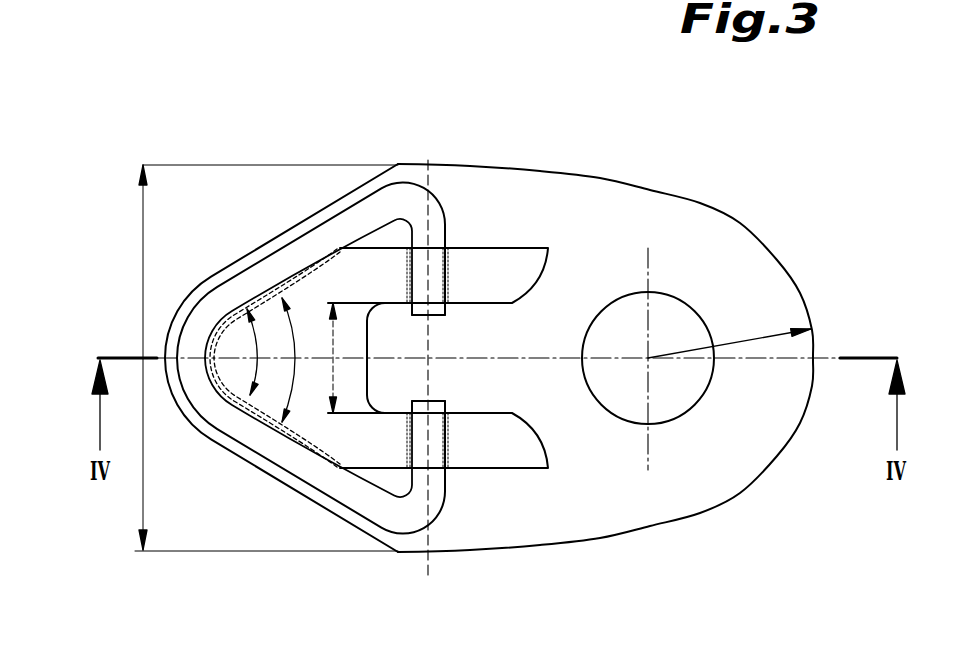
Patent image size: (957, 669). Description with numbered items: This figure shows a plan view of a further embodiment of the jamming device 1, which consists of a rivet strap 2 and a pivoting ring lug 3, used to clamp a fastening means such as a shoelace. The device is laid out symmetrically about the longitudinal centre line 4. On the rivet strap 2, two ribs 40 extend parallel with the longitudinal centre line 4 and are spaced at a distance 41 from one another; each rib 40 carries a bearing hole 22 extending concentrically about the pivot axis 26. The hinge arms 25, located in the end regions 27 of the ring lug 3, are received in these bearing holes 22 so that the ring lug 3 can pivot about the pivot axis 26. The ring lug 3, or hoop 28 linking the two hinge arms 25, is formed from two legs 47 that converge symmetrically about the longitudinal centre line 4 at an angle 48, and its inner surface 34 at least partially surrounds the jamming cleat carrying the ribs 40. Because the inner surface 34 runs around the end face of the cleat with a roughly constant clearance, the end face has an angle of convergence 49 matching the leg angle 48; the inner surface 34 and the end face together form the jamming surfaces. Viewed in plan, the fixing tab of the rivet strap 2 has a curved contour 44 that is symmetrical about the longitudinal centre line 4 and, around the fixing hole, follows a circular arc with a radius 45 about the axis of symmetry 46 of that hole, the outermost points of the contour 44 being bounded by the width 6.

The jamming device 1 is at (386, 107).
The rivet strap 2 is at (608, 142).
The ring lug 3 is at (240, 212).
The longitudinal centre line 4 is at (832, 355).
The width 6 is at (143, 282).
The bearing holes 22 is at (408, 277).
The hinge arms 25 is at (432, 310).
The pivot axis 26 is at (428, 563).
The end regions 27 is at (458, 273).
The hoop 28 is at (250, 278).
The inner surface 34 is at (340, 248).
The rib 40 is at (497, 275).
The distance 41 is at (330, 372).
The curved contour 44 is at (727, 211).
The radius 45 is at (765, 335).
The axis of symmetry 46 is at (648, 362).
The legs 47 is at (310, 243).
The angle 48 is at (252, 377).
The angle of convergence 49 is at (290, 377).